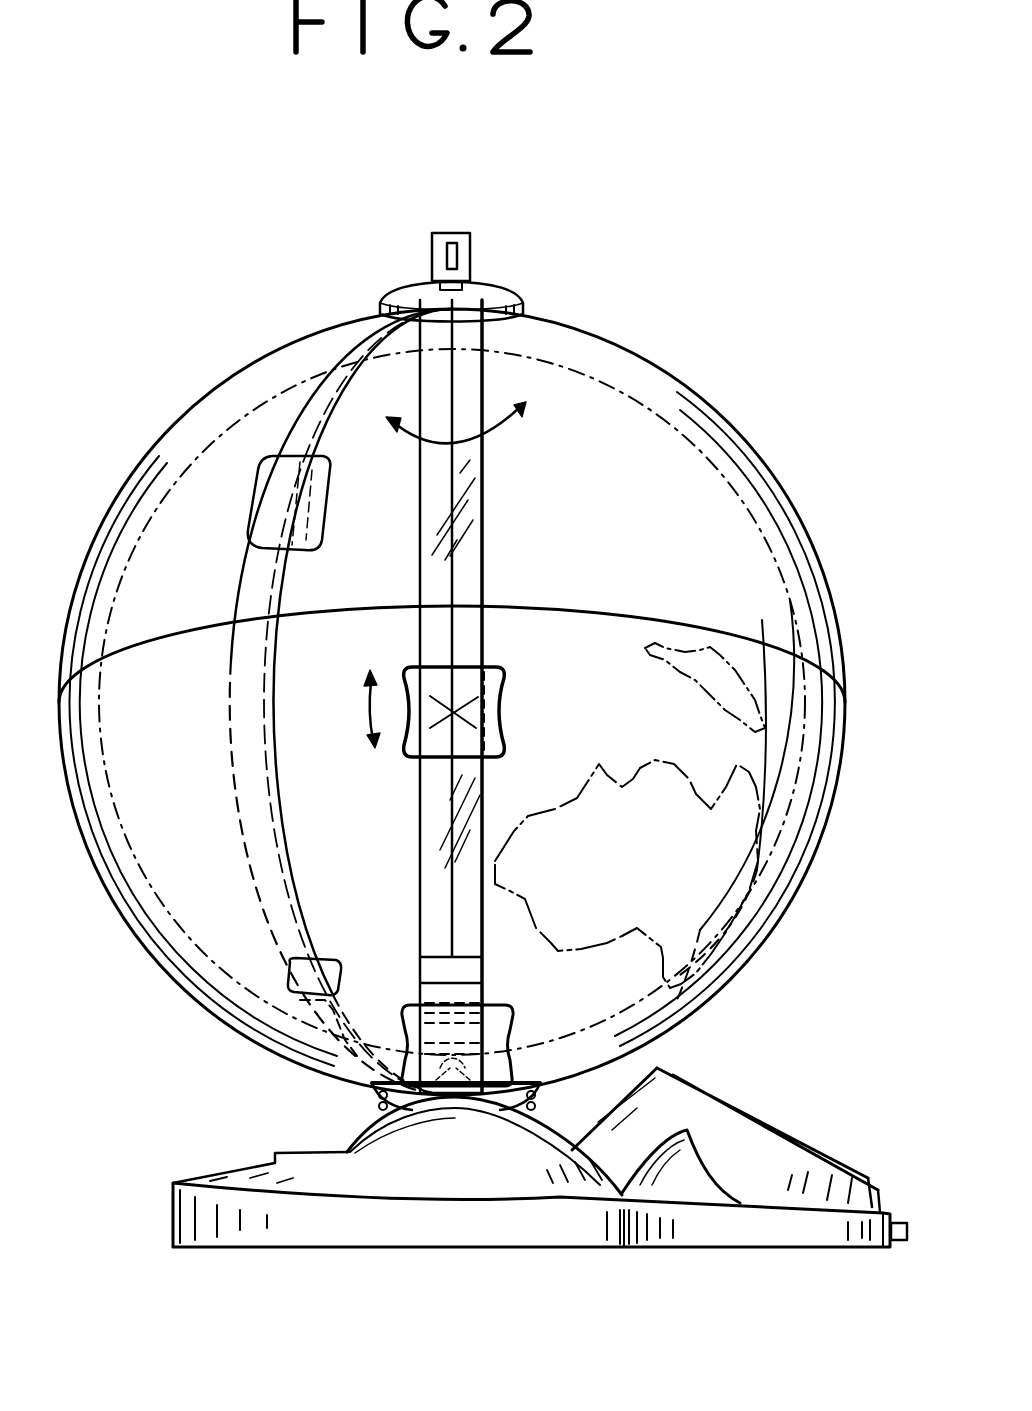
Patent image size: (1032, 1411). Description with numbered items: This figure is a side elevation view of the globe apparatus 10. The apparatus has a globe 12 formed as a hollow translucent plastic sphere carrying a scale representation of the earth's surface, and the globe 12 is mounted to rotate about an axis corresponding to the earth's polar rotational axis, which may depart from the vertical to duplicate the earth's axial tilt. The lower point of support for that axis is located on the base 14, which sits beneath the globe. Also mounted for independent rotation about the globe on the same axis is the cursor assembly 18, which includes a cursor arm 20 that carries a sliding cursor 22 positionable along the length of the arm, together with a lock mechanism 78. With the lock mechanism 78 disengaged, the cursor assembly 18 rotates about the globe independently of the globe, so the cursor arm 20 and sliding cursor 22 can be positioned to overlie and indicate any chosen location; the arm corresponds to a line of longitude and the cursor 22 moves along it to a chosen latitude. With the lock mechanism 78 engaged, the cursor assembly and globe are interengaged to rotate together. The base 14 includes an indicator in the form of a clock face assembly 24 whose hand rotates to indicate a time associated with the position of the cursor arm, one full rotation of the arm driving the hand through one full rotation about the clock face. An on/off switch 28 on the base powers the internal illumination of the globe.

The globe apparatus 10 is at (610, 322).
The globe 12 is at (222, 404).
The base 14 is at (450, 567).
The cursor assembly 18 is at (483, 499).
The cursor arm 20 is at (420, 795).
The sliding cursor 22 is at (502, 668).
The clock face assembly 24 is at (716, 1080).
The on/off switch 28 is at (907, 1227).
The lock mechanism 78 is at (510, 1000).